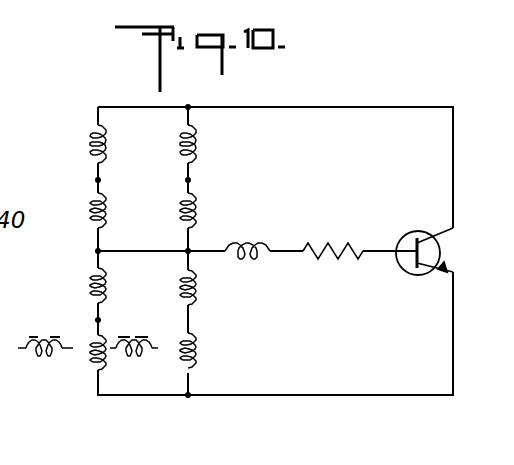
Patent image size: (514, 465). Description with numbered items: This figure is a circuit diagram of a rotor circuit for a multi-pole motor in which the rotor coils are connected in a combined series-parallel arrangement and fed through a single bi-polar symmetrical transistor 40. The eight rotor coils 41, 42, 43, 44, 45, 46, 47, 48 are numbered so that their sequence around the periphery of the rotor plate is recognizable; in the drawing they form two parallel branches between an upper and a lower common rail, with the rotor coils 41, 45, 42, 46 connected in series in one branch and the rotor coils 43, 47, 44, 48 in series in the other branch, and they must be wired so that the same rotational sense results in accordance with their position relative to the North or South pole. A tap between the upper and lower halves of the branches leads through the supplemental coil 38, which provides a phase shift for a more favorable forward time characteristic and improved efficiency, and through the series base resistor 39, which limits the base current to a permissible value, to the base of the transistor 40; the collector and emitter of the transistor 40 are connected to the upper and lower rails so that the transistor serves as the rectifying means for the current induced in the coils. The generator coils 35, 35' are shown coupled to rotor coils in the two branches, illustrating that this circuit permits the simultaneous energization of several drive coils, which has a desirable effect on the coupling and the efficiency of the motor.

The generator coil 35 is at (36, 367).
The generator coil 35' is at (134, 381).
The supplemental coil 38 is at (249, 242).
The series base resistor 39 is at (331, 250).
The bi-polar symmetrical transistor 40 is at (422, 231).
The rotor coil 41 is at (103, 160).
The rotor coil 42 is at (101, 300).
The rotor coil 43 is at (192, 148).
The rotor coil 44 is at (191, 300).
The rotor coil 45 is at (103, 223).
The rotor coil 46 is at (93, 357).
The rotor coil 47 is at (193, 223).
The rotor coil 48 is at (191, 357).